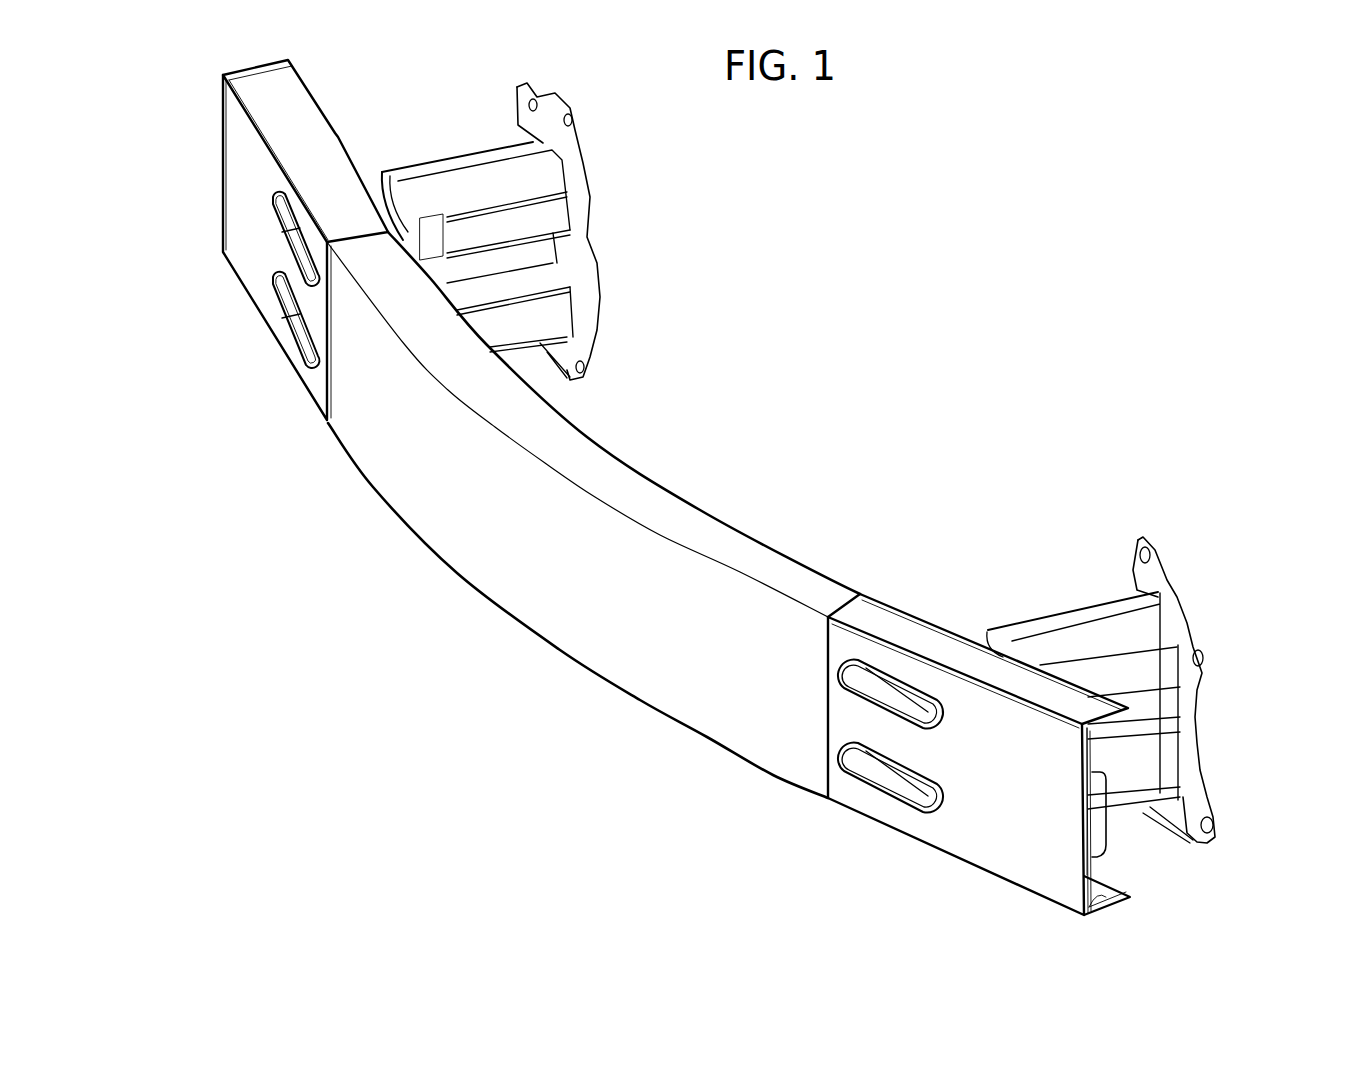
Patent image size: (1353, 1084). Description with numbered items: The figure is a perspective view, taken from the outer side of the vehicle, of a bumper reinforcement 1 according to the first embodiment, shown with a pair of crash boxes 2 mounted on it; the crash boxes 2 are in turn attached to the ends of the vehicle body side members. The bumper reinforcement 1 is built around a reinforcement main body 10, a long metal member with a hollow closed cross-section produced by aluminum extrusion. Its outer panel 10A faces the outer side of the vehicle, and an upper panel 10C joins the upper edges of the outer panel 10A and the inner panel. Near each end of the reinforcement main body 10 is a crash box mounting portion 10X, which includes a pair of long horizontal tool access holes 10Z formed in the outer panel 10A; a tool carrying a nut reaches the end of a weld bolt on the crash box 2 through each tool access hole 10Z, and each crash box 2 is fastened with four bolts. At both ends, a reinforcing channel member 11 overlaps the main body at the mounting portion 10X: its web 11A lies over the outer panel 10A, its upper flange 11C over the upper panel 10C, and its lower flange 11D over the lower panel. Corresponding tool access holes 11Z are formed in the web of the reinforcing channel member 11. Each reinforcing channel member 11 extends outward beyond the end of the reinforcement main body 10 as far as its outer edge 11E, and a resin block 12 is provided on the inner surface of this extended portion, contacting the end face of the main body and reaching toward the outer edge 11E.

The bumper reinforcement 1 is at (691, 470).
The crash box 2 is at (456, 183).
The reinforcement main body 10 is at (479, 566).
The outer panel 10A is at (579, 639).
The upper panel 10C is at (732, 540).
The crash box mounting portion 10X is at (257, 365).
The tool access hole 10Z is at (888, 677).
The reinforcing channel member 11 is at (235, 216).
The web 11A is at (955, 843).
The upper flange 11C is at (935, 637).
The lower flange 11D is at (1127, 900).
The outer edge 11E is at (1100, 752).
The tool access hole 11Z is at (915, 625).
The resin block 12 is at (1103, 900).